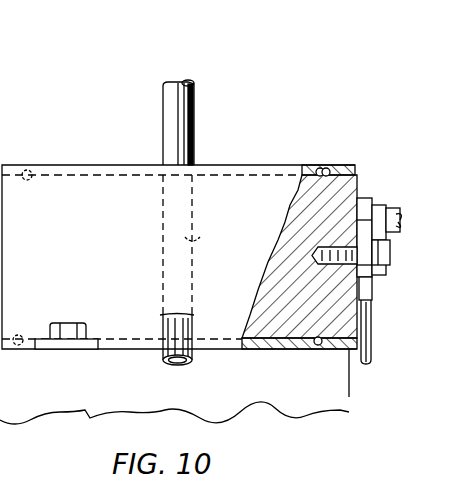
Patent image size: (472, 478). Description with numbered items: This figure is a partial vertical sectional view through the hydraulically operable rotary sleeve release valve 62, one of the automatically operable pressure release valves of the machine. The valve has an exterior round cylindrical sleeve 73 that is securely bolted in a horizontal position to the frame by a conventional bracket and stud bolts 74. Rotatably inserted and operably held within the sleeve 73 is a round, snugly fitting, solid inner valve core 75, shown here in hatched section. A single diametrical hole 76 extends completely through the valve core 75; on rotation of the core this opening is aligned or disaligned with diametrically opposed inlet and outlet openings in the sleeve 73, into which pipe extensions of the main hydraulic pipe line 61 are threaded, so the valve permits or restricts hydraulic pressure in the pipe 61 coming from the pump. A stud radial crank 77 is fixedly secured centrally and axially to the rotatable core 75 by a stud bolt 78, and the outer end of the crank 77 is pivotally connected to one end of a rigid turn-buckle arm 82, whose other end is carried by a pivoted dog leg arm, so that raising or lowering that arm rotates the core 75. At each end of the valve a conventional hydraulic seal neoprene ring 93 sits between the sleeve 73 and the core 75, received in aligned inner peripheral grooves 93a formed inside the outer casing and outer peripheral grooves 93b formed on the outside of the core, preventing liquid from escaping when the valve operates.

The main hydraulic pipe line 61 is at (188, 100).
The pressure release valve 62 is at (237, 163).
The exterior round cylindrical sleeve 73 is at (17, 165).
The bracket and stud bolts 74 is at (62, 323).
The rotatable solid inner valve core 75 is at (368, 205).
The diametrical hole 76 is at (195, 238).
The stud radial crank 77 is at (378, 205).
The stud bolt 78 is at (390, 255).
The rigid turn-buckle arm 82 is at (366, 350).
The hydraulic seal neoprene ring 93 is at (318, 345).
The inner peripheral grooves 93a is at (320, 168).
The outer peripheral grooves 93b is at (345, 205).